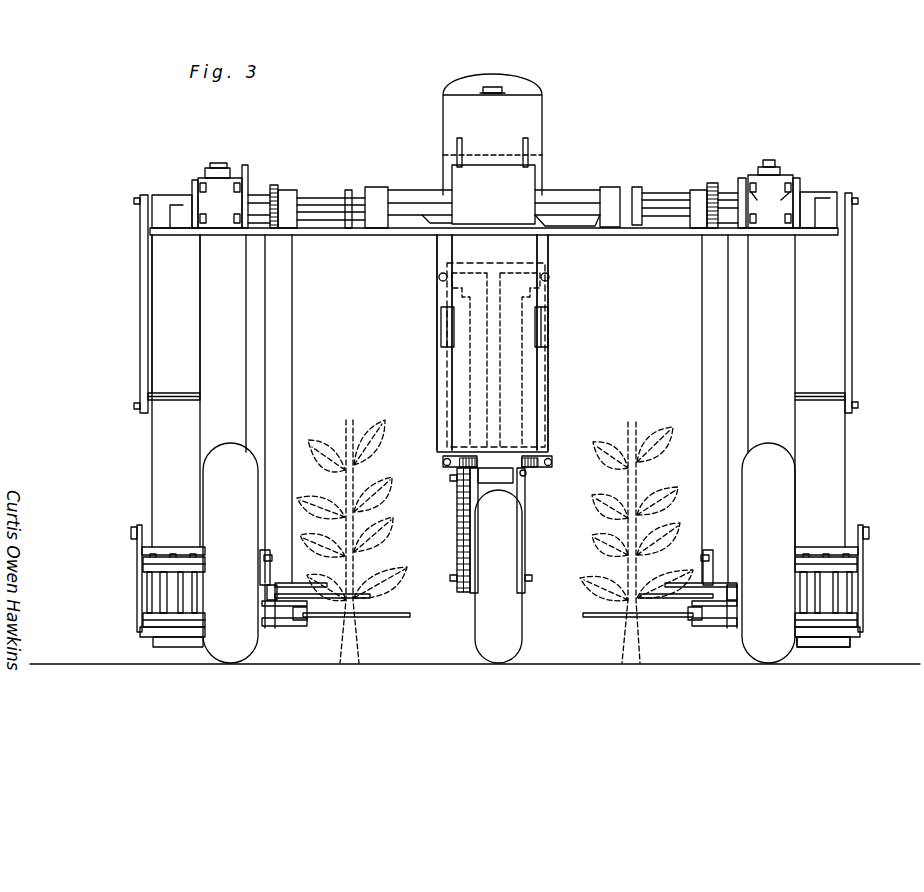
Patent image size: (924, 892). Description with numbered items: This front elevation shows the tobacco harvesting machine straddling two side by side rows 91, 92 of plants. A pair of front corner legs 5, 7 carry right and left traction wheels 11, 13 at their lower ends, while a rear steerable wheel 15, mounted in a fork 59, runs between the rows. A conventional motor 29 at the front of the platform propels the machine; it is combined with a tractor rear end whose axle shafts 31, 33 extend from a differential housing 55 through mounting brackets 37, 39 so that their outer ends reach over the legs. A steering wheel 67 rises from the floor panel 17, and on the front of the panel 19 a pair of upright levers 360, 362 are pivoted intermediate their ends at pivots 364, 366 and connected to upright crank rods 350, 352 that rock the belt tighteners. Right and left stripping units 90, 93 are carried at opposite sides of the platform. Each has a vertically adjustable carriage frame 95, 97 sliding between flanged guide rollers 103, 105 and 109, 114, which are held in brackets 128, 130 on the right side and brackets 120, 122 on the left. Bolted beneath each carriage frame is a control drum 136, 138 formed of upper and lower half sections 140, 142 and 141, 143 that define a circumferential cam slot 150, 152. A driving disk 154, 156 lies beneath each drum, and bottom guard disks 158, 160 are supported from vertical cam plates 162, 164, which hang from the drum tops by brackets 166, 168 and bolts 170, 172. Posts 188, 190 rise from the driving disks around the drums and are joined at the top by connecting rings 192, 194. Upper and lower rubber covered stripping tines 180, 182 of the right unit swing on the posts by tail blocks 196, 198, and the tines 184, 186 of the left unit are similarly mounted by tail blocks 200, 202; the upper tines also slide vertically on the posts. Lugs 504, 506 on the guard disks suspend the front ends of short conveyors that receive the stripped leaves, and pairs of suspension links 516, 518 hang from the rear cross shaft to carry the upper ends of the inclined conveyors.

The motor 29 is at (443, 140).
The bracket 130 is at (192, 185).
The bracket 128 is at (246, 180).
The guide roller 103 is at (236, 192).
The guide roller 105 is at (236, 226).
The axle shaft 33 is at (318, 198).
The mounting bracket 39 is at (377, 187).
The differential housing 55 is at (511, 195).
The mounting bracket 37 is at (610, 190).
The axle shaft 31 is at (665, 198).
The bracket 122 is at (741, 182).
The guide roller 109 is at (770, 194).
The bracket 120 is at (801, 191).
The guide roller 114 is at (788, 226).
The suspension link 518 is at (852, 260).
The suspension link 516 is at (140, 272).
The carriage frame 97 is at (785, 313).
The carriage frame 95 is at (200, 325).
The stripping unit 90 is at (137, 474).
The front corner leg 5 is at (282, 372).
The stripping unit 93 is at (801, 457).
The steering wheel 67 is at (528, 262).
The crank rod 350 is at (452, 297).
The crank rod 352 is at (522, 300).
The pivot 364 is at (441, 330).
The pivot 366 is at (557, 333).
The upright lever 360 is at (448, 370).
The upright lever 362 is at (546, 366).
The panel 19 is at (552, 380).
The floor panel 17 is at (522, 447).
The row of plants 91 is at (352, 440).
The row of plants 92 is at (645, 440).
The front corner leg 7 is at (702, 418).
The traction wheel 11 is at (245, 492).
The traction wheel 13 is at (740, 480).
The fork 59 is at (465, 522).
The steerable wheel 15 is at (510, 636).
The bolt 170 is at (131, 532).
The bracket 166 is at (143, 536).
The cam plate 162 is at (142, 552).
The connecting ring 192 is at (143, 572).
The post 188 is at (190, 590).
The control drum 136 is at (175, 596).
The driving disk 154 is at (143, 620).
The bottom guard disk 158 is at (143, 632).
The lug 504 is at (153, 645).
The upper half section 140 is at (272, 583).
The tail block 196 is at (277, 590).
The upper stripping tines 180 is at (330, 592).
The cam slot 150 is at (270, 590).
The lower half section 142 is at (275, 612).
The tail block 198 is at (303, 621).
The lower stripping tines 182 is at (383, 618).
The upper stripping tines 184 is at (636, 612).
The tail block 200 is at (733, 585).
The upper half section 141 is at (735, 582).
The cam slot 152 is at (737, 593).
The lower half section 143 is at (735, 606).
The lower stripping tines 186 is at (655, 618).
The tail block 202 is at (698, 622).
The bracket 168 is at (857, 535).
The bolt 172 is at (867, 530).
The cam plate 164 is at (863, 555).
The connecting ring 194 is at (857, 570).
The control drum 138 is at (825, 588).
The post 190 is at (855, 608).
The driving disk 156 is at (863, 623).
The bottom guard disk 160 is at (862, 633).
The lug 506 is at (852, 647).